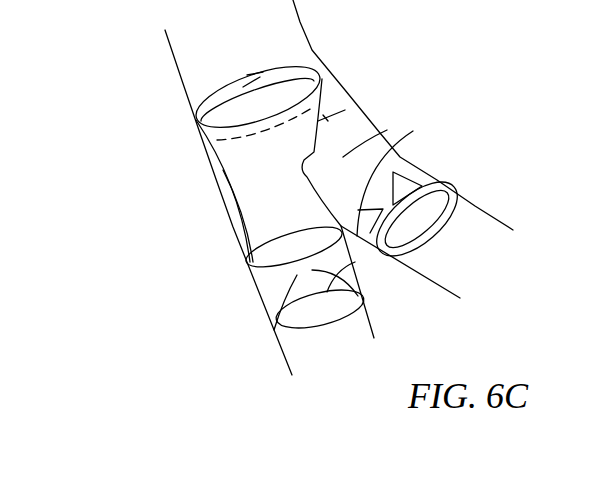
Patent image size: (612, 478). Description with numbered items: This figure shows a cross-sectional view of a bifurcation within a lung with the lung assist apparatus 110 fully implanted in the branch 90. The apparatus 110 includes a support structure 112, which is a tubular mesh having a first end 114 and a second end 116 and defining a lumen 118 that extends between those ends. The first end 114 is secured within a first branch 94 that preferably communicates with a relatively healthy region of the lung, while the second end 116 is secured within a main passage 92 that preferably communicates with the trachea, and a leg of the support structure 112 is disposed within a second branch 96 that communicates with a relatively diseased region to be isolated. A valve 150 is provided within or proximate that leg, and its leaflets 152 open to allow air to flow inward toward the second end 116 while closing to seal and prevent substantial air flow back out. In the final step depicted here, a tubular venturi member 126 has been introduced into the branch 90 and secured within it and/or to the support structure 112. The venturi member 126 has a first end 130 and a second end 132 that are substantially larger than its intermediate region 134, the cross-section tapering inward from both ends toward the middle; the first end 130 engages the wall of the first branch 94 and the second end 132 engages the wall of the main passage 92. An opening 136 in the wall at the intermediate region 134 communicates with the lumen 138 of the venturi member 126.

The branch 90 is at (233, 227).
The main passage 92 is at (168, 49).
The first branch 94 is at (280, 354).
The second branch 96 is at (420, 281).
The apparatus 110 is at (378, 73).
The support structure 112 is at (393, 157).
The first end 114 is at (282, 334).
The second end 116 is at (302, 68).
The lumen 118 is at (323, 318).
The venturi member 126 is at (215, 166).
The first end 130 is at (250, 261).
The second end 132 is at (200, 135).
The intermediate region 134 is at (232, 182).
The opening 136 is at (323, 157).
The lumen 138 is at (272, 264).
The valve 150 is at (436, 181).
The leaflets 152 is at (437, 181).